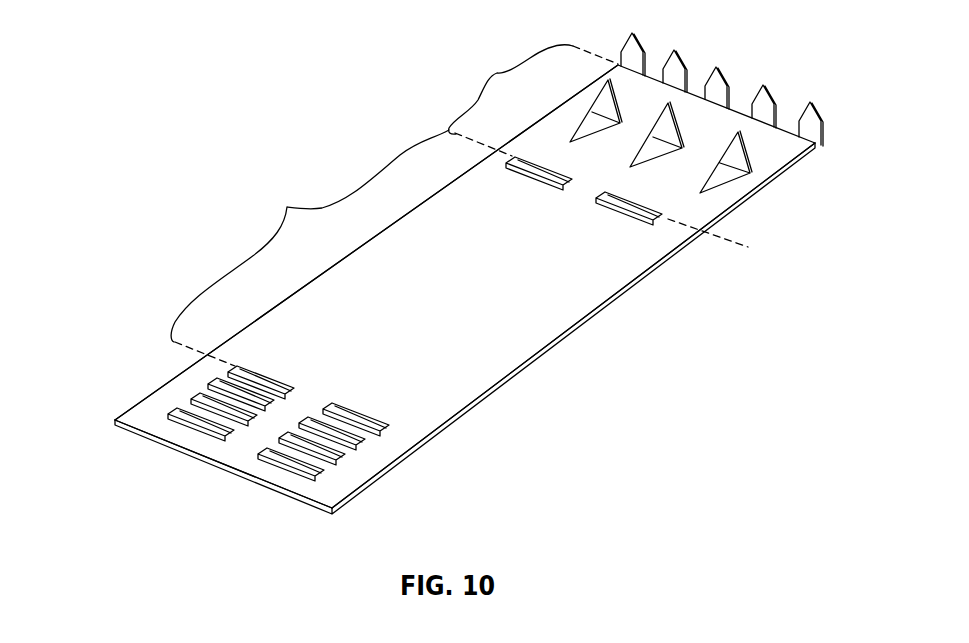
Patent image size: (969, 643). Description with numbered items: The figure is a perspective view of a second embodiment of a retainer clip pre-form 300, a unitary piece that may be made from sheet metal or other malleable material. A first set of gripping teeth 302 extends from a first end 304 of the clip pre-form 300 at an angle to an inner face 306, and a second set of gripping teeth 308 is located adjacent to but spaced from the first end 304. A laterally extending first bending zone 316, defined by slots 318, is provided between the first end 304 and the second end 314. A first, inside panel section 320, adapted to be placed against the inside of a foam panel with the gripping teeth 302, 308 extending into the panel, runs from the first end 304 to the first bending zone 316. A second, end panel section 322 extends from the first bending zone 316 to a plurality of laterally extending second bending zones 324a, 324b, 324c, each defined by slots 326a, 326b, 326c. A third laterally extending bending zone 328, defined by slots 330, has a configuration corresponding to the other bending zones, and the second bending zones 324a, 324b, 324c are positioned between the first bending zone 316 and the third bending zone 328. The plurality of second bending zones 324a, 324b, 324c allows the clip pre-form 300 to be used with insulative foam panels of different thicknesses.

The clip pre-form 300 is at (233, 152).
The first set of gripping teeth 302 is at (813, 105).
The first end 304 is at (787, 128).
The inner face 306 is at (558, 322).
The second set of gripping teeth 308 is at (751, 158).
The second end 314 is at (322, 508).
The first bending zone 316 is at (752, 248).
The slots 318 is at (536, 183).
The inside panel section 320 is at (497, 73).
The end panel section 322 is at (287, 207).
The second bending zone 324a is at (384, 428).
The second bending zone 324b is at (365, 438).
The second bending zone 324c is at (346, 458).
The slots 326a is at (264, 372).
The slots 326b is at (210, 385).
The slots 326c is at (192, 400).
The third bending zone 328 is at (118, 413).
The slots 330 is at (200, 427).